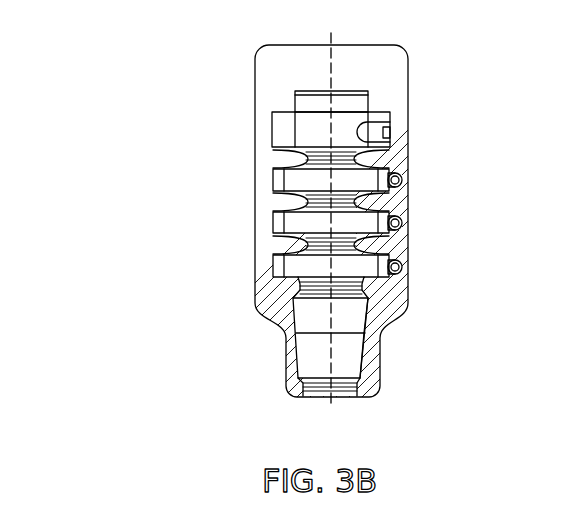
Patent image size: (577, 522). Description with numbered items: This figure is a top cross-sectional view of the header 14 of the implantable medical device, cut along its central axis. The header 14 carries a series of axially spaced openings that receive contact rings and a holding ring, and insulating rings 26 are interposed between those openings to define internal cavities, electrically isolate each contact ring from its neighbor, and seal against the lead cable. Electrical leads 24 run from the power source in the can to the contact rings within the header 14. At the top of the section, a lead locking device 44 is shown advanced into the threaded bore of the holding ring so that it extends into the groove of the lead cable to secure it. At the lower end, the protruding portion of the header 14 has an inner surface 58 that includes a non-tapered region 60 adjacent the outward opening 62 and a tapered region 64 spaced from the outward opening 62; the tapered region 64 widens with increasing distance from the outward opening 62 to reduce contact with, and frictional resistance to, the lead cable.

The header 14 is at (268, 86).
The insulating rings 26 is at (293, 162).
The lead locking device 44 is at (385, 131).
The electrical leads 24 is at (402, 181).
The inner surface 58 is at (305, 358).
The tapered region 64 is at (360, 318).
The non-tapered region 60 is at (357, 370).
The outward opening 62 is at (319, 397).